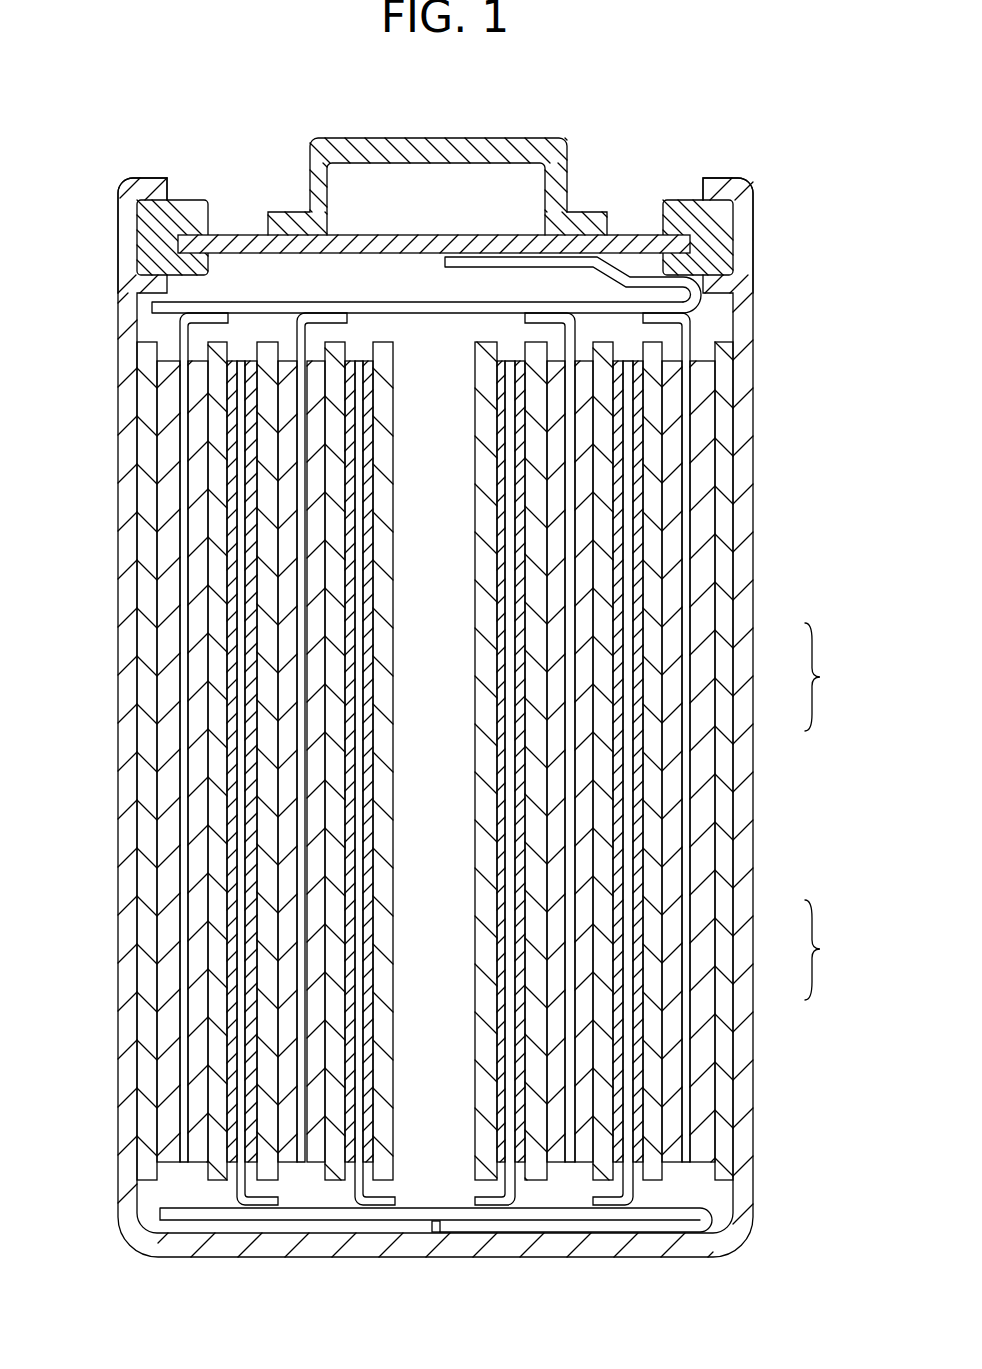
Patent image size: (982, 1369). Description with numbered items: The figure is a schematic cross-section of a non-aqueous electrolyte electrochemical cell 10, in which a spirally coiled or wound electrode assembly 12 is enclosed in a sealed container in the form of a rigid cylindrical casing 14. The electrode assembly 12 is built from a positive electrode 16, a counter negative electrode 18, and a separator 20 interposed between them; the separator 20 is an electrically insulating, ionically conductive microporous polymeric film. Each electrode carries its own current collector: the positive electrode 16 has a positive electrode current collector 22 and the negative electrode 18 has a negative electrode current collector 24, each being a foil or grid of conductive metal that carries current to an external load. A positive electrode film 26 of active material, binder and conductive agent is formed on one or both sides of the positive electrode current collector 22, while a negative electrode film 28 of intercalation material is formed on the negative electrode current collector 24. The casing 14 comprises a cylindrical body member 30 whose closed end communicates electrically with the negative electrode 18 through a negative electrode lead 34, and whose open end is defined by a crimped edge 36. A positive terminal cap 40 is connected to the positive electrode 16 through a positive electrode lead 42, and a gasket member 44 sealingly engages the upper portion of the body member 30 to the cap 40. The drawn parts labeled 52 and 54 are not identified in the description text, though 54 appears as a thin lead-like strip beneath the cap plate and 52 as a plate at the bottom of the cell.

The electrochemical cell 10 is at (585, 105).
The electrode assembly 12 is at (500, 785).
The cylindrical casing 14 is at (472, 196).
The positive electrode 16 is at (510, 714).
The negative electrode 18 is at (545, 832).
The separator 20 is at (722, 825).
The positive electrode current collector 22 is at (215, 318).
The negative electrode current collector 24 is at (630, 935).
The positive electrode film 26 is at (673, 752).
The negative electrode film 28 is at (620, 1032).
The cylindrical body member 30 is at (748, 583).
The negative electrode lead 34 is at (440, 1225).
The crimped edge 36 is at (168, 186).
The positive terminal cap 40 is at (458, 130).
The positive electrode lead 42 is at (400, 310).
The gasket member 44 is at (190, 212).
The negative current collector plate 52 is at (565, 1222).
The lead 54 is at (553, 266).